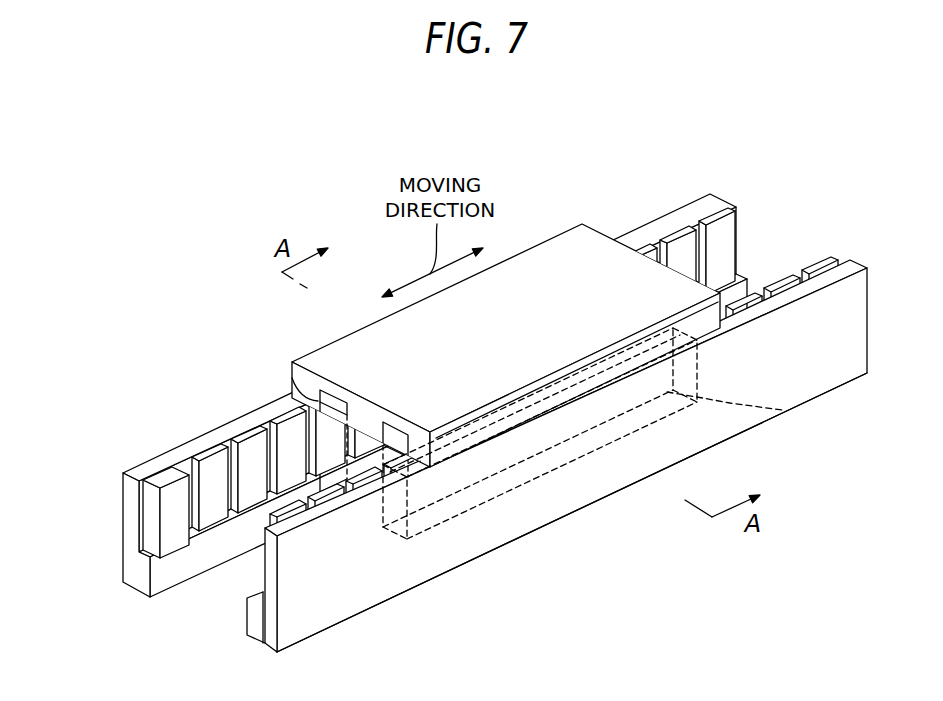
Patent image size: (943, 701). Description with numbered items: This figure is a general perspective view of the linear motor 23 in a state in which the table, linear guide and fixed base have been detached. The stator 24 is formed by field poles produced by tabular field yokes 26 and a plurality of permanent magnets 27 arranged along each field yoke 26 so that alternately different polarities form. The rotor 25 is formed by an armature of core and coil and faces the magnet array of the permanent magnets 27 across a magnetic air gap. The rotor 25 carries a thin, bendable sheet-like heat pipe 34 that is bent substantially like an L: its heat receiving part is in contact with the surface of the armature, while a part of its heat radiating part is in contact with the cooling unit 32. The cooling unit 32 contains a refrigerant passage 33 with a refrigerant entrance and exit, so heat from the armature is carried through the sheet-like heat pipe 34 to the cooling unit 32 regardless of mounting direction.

The linear motor 23 is at (188, 354).
The stator 24 is at (600, 503).
The rotor 25 is at (782, 411).
The tabular field yokes 26 is at (130, 494).
The permanent magnets 27 is at (203, 458).
The cooling unit 32 is at (358, 350).
The refrigerant passage 33 is at (292, 378).
The sheet-like heat pipe 34 is at (477, 503).